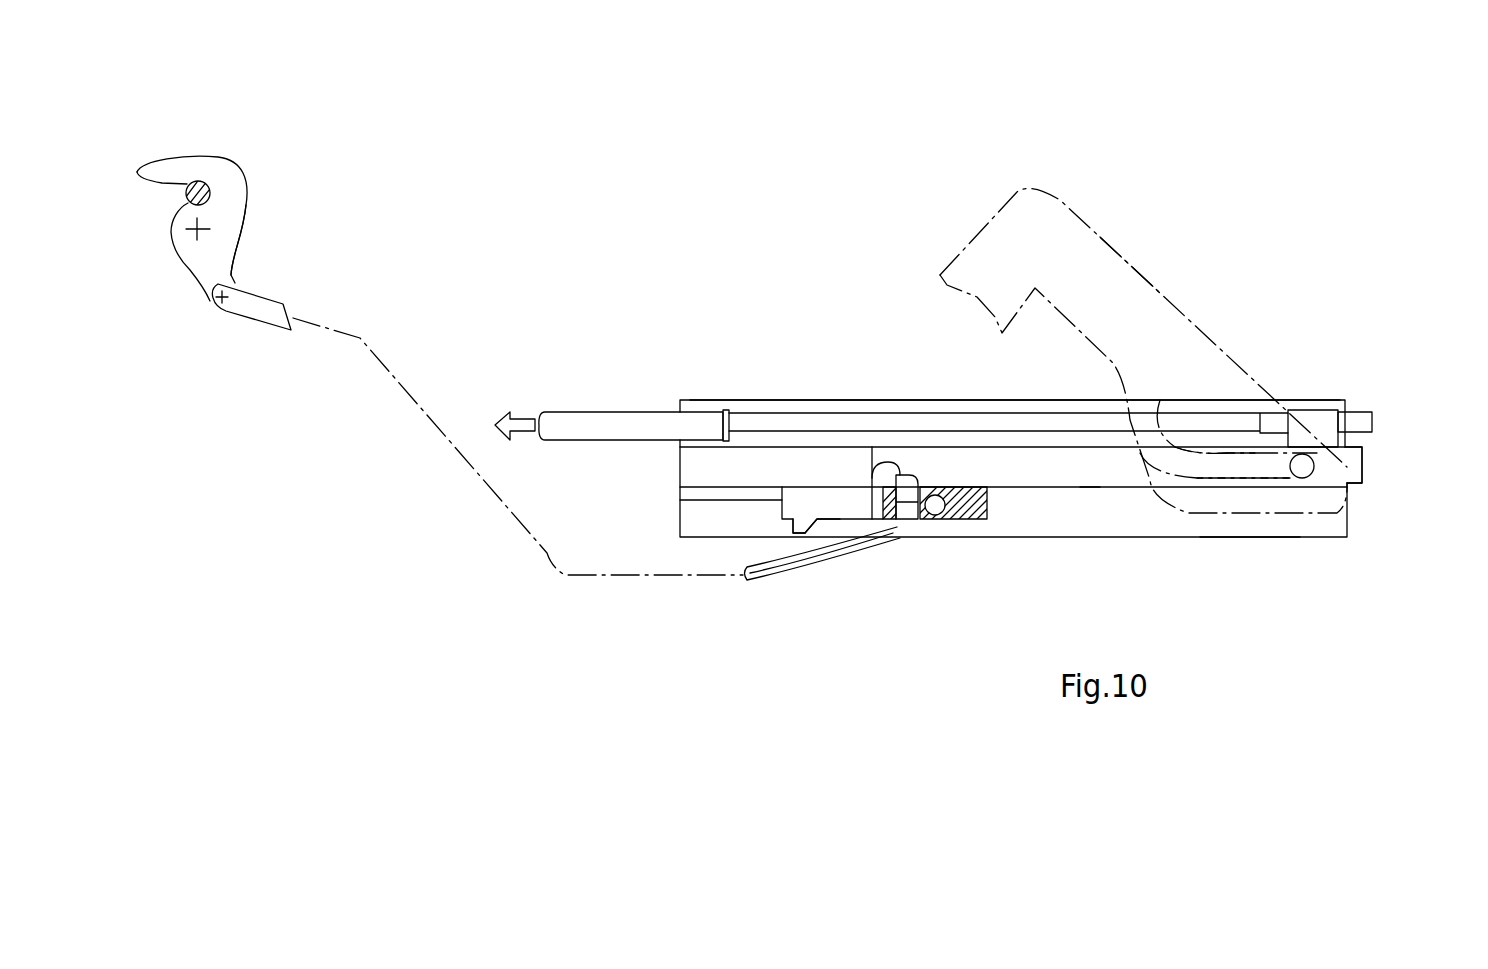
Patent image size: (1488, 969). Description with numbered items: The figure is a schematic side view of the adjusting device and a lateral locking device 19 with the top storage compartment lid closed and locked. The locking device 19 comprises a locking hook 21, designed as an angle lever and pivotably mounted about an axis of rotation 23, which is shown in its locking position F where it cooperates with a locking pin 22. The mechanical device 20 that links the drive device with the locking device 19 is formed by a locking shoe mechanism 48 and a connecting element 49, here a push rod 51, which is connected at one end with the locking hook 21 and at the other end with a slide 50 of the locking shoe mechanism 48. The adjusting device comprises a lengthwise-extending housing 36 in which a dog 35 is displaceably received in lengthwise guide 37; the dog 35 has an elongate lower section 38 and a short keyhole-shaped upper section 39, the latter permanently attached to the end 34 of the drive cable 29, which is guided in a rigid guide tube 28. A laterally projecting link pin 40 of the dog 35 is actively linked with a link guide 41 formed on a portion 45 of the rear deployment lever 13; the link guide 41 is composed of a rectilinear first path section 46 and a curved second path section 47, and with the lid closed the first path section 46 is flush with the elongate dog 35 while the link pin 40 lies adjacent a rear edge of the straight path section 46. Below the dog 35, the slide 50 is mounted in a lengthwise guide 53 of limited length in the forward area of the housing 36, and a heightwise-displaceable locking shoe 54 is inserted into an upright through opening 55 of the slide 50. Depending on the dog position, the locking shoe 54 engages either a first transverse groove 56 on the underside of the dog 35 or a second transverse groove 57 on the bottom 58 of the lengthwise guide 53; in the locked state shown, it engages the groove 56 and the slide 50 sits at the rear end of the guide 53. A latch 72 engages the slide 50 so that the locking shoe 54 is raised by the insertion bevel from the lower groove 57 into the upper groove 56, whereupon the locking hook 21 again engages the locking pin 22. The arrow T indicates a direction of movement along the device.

The rear deployment lever 13 is at (1071, 192).
The locking device 19 is at (237, 155).
The mechanical device 20 is at (862, 398).
The locking hook 21 is at (236, 192).
The locking pin 22 is at (198, 181).
The axis of rotation 23 is at (193, 229).
The guide tube 28 is at (637, 409).
The drive cable 29 is at (766, 412).
The end of drive cable 34 is at (1356, 410).
The dog 35 is at (1087, 477).
The housing 36 is at (1253, 540).
The lengthwise guide 37 is at (982, 398).
The lower section of dog 38 is at (1357, 450).
The upper section of dog 39 is at (1323, 408).
The link pin 40 is at (1316, 472).
The link guide 41 is at (1233, 440).
The portion of rear deployment lever 45 is at (1121, 272).
The first path section 46 is at (1239, 482).
The second path section 47 is at (1196, 416).
The locking shoe mechanism 48 is at (921, 466).
The connecting element 49 is at (755, 588).
The slide 50 is at (981, 519).
The push rod 51 is at (268, 316).
The lengthwise guide 53 is at (838, 503).
The locking shoe 54 is at (913, 513).
The through opening 55 is at (893, 521).
The first transverse groove 56 is at (894, 470).
The second transverse groove 57 is at (798, 538).
The bottom of lengthwise guide 58 is at (838, 524).
The latch 72 is at (877, 500).
The locking position F is at (167, 151).
The direction arrow T is at (1418, 480).